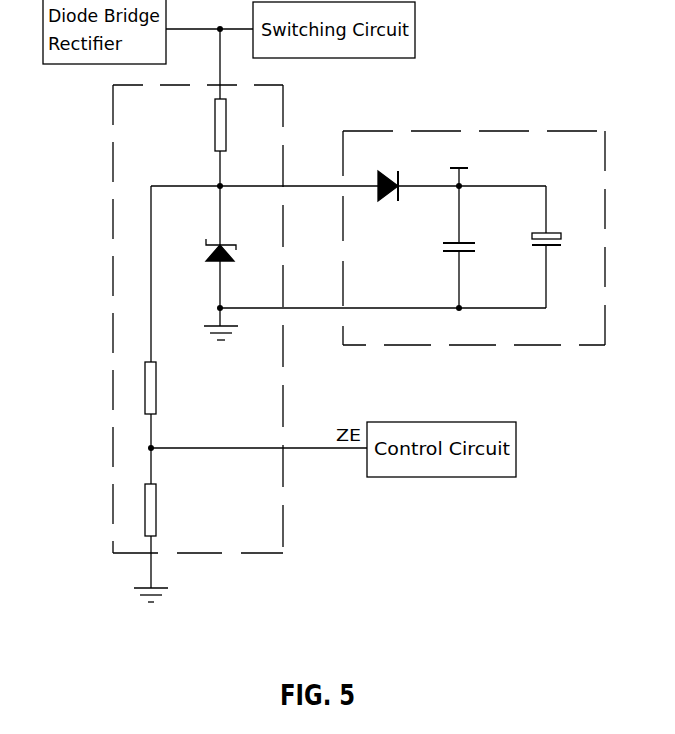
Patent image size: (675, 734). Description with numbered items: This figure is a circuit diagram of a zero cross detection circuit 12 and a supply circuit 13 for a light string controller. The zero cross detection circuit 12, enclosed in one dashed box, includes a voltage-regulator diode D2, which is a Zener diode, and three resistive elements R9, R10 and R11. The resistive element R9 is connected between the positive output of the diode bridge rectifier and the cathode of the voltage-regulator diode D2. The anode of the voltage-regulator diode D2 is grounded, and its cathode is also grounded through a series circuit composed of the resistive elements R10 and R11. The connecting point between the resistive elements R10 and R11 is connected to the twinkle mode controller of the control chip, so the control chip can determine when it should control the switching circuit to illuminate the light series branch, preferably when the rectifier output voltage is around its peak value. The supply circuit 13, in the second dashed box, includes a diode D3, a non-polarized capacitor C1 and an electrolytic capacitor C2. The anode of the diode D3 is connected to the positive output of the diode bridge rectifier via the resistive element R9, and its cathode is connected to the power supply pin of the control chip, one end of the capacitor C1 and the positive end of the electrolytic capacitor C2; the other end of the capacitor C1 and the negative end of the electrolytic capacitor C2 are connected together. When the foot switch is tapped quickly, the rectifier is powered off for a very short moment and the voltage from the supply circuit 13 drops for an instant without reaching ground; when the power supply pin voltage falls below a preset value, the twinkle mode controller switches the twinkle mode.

The zero cross detection circuit 12 is at (130, 288).
The supply circuit 13 is at (503, 163).
The resistive element R9 is at (238, 125).
The resistive element R10 is at (172, 388).
The resistive element R11 is at (172, 510).
The voltage-regulator diode D2 is at (237, 247).
The diode D3 is at (388, 173).
The non-polarized capacitor C1 is at (473, 247).
The electrolytic capacitor C2 is at (561, 215).